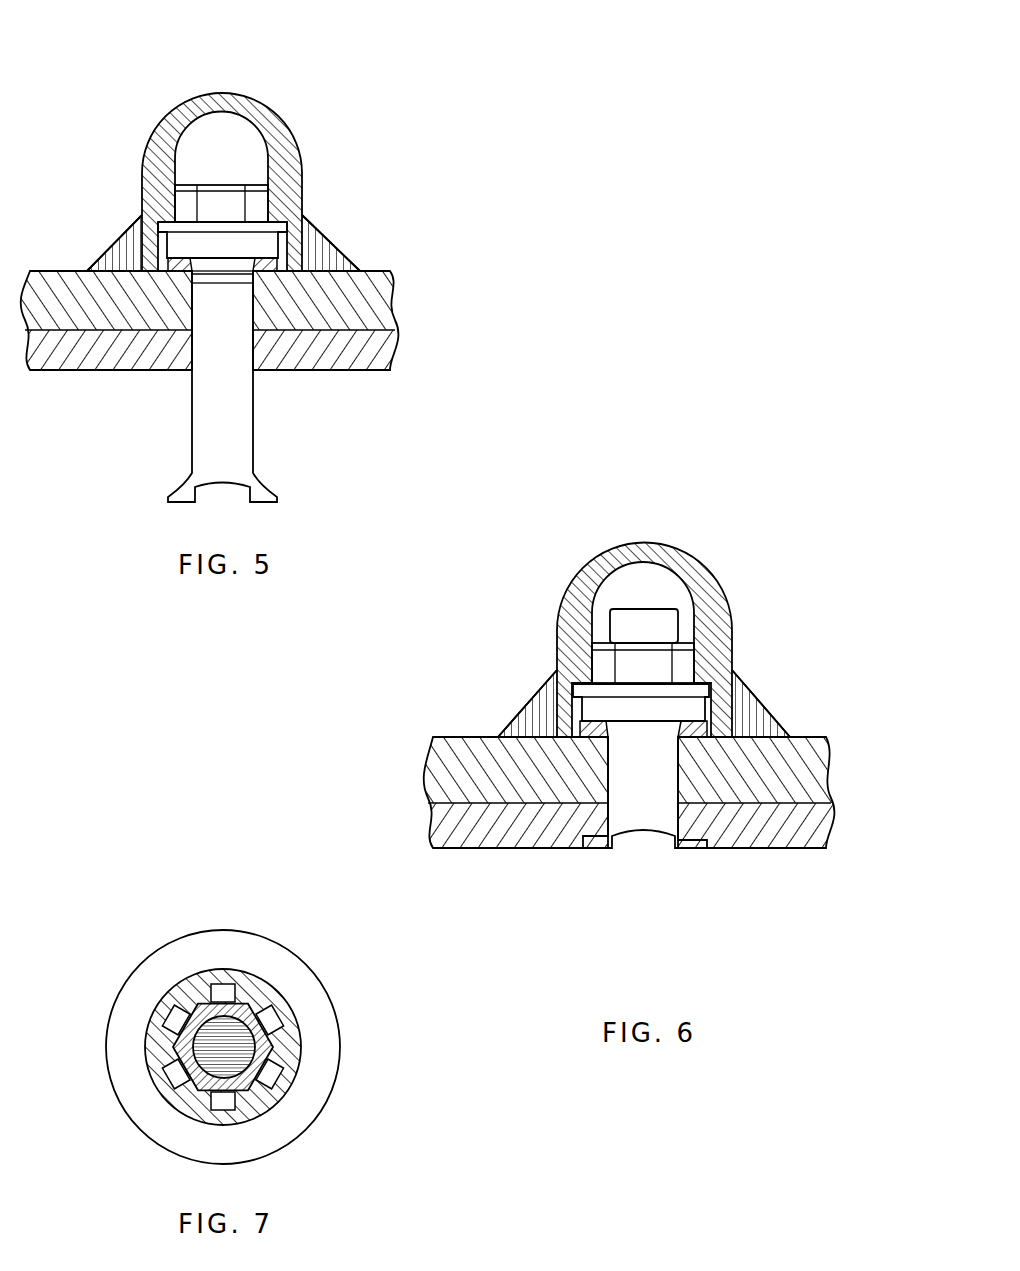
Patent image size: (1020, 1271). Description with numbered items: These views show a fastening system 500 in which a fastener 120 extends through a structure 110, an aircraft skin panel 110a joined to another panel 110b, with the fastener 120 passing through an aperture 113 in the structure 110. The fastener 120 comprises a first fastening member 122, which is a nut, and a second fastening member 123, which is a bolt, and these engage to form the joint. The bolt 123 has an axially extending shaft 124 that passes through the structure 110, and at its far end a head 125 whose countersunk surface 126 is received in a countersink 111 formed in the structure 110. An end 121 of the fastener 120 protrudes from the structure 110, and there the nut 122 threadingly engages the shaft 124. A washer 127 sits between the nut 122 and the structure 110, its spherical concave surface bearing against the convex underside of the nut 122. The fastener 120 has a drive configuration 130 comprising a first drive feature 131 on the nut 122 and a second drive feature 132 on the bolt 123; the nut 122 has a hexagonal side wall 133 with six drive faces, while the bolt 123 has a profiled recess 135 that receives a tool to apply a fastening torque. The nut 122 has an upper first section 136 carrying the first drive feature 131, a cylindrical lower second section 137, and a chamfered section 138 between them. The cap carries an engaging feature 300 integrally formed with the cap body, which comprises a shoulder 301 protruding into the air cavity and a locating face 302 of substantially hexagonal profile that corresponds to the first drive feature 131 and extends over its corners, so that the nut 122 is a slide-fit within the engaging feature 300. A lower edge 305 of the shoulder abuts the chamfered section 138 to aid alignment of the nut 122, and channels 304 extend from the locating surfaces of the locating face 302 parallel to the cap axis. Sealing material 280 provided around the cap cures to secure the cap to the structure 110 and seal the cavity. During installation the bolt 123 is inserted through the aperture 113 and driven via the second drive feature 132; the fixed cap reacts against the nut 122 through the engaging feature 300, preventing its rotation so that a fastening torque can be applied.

In FIG. 5, the fastener assembly 500 is at (462, 86).
In FIG. 5, the structure 110 is at (367, 292).
In FIG. 6, the structure 110 is at (817, 771).
In FIG. 6, the aircraft skin panel 110a is at (432, 822).
In FIG. 6, the panel 110b is at (435, 760).
In FIG. 5, the countersink 111 is at (261, 368).
In FIG. 6, the countersink 111 is at (590, 832).
In FIG. 5, the aperture 113 is at (183, 310).
In FIG. 6, the fastener 120 is at (665, 625).
In FIG. 6, the end 121 is at (604, 633).
In FIG. 5, the first fastening member 122 is at (143, 160).
In FIG. 6, the first fastening member 122 is at (700, 670).
In FIG. 5, the second fastening member 123 is at (230, 407).
In FIG. 6, the second fastening member 123 is at (663, 773).
In FIG. 5, the shaft 124 is at (203, 423).
In FIG. 6, the shaft 124 is at (617, 768).
In FIG. 6, the head 125 is at (683, 838).
In FIG. 6, the countersunk surface 126 is at (697, 836).
In FIG. 6, the washer 127 is at (715, 728).
In FIG. 5, the drive configuration 130 is at (215, 190).
In FIG. 6, the drive configuration 130 is at (600, 667).
In FIG. 6, the first drive feature 131 is at (683, 660).
In FIG. 6, the second drive feature 132 is at (637, 843).
In FIG. 6, the side wall 133 is at (637, 657).
In FIG. 6, the profiled recess 135 is at (627, 845).
In FIG. 6, the first section 136 is at (602, 653).
In FIG. 6, the second section 137 is at (722, 695).
In FIG. 6, the chamfered section 138 is at (600, 692).
In FIG. 6, the sealing material 280 is at (517, 723).
In FIG. 5, the engaging feature 300 is at (278, 199).
In FIG. 6, the engaging feature 300 is at (644, 640).
In FIG. 7, the engaging feature 300 is at (245, 966).
In FIG. 5, the shoulder 301 is at (273, 162).
In FIG. 7, the shoulder 301 is at (300, 1033).
In FIG. 5, the locating face 302 is at (147, 198).
In FIG. 7, the locating face 302 is at (260, 1007).
In FIG. 7, the channels 304 is at (172, 1017).
In FIG. 5, the lower edge 305 is at (268, 241).